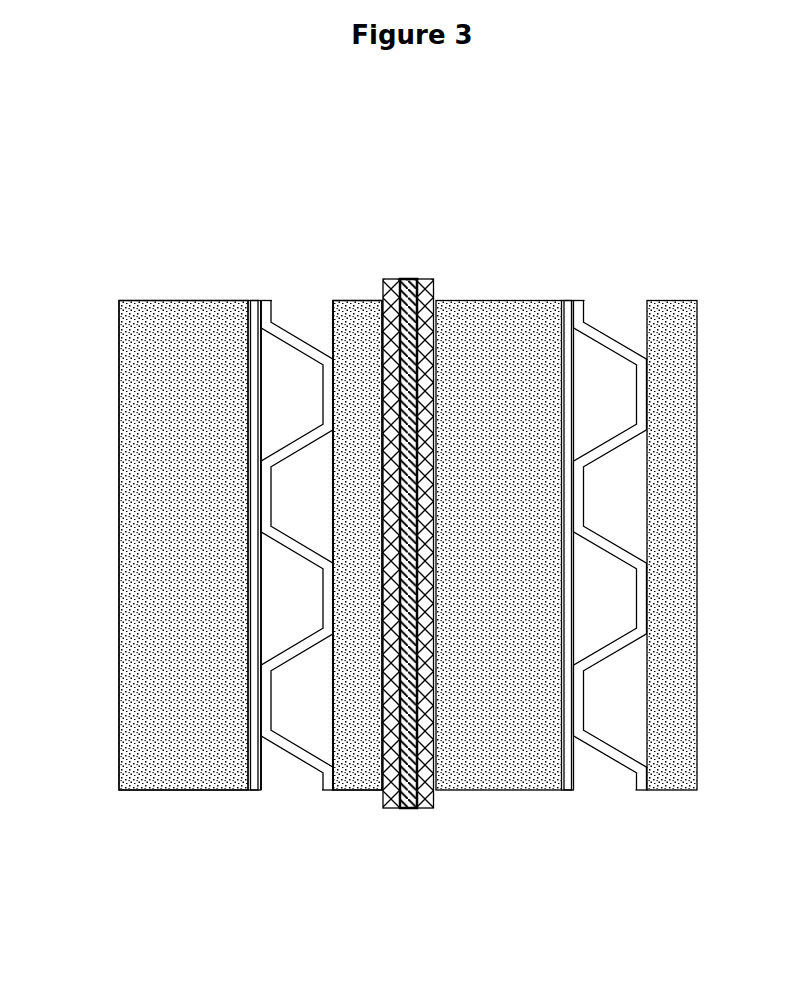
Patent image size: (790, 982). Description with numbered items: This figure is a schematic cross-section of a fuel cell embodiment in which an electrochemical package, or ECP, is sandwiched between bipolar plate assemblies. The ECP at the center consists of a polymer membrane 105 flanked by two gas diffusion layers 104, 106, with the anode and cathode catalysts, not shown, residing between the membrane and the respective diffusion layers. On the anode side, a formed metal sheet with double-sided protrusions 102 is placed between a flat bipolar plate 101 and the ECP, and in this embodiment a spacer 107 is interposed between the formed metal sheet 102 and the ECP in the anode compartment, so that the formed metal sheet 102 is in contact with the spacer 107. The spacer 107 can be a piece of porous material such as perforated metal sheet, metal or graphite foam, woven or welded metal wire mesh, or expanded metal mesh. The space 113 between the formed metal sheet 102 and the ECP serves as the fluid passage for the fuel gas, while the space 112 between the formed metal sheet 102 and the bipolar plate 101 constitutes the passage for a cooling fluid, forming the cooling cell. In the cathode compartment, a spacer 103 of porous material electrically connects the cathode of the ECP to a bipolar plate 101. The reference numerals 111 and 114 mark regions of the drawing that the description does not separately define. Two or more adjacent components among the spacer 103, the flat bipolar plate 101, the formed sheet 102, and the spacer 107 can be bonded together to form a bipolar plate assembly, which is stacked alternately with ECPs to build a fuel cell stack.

The flat bipolar plate 101 is at (358, 597).
The formed metal sheet with double-sided protrusions 102 is at (420, 610).
The spacer 103 is at (302, 579).
The gas diffusion layer 104 is at (332, 590).
The polymer membrane 105 is at (350, 605).
The gas diffusion layer 106 is at (373, 620).
The spacer 107 is at (488, 629).
The first electrode assembly 111 is at (203, 515).
The space for cooling fluid 112 is at (339, 478).
The space for fuel gas 113 is at (388, 516).
The electrode layer 114 is at (400, 495).